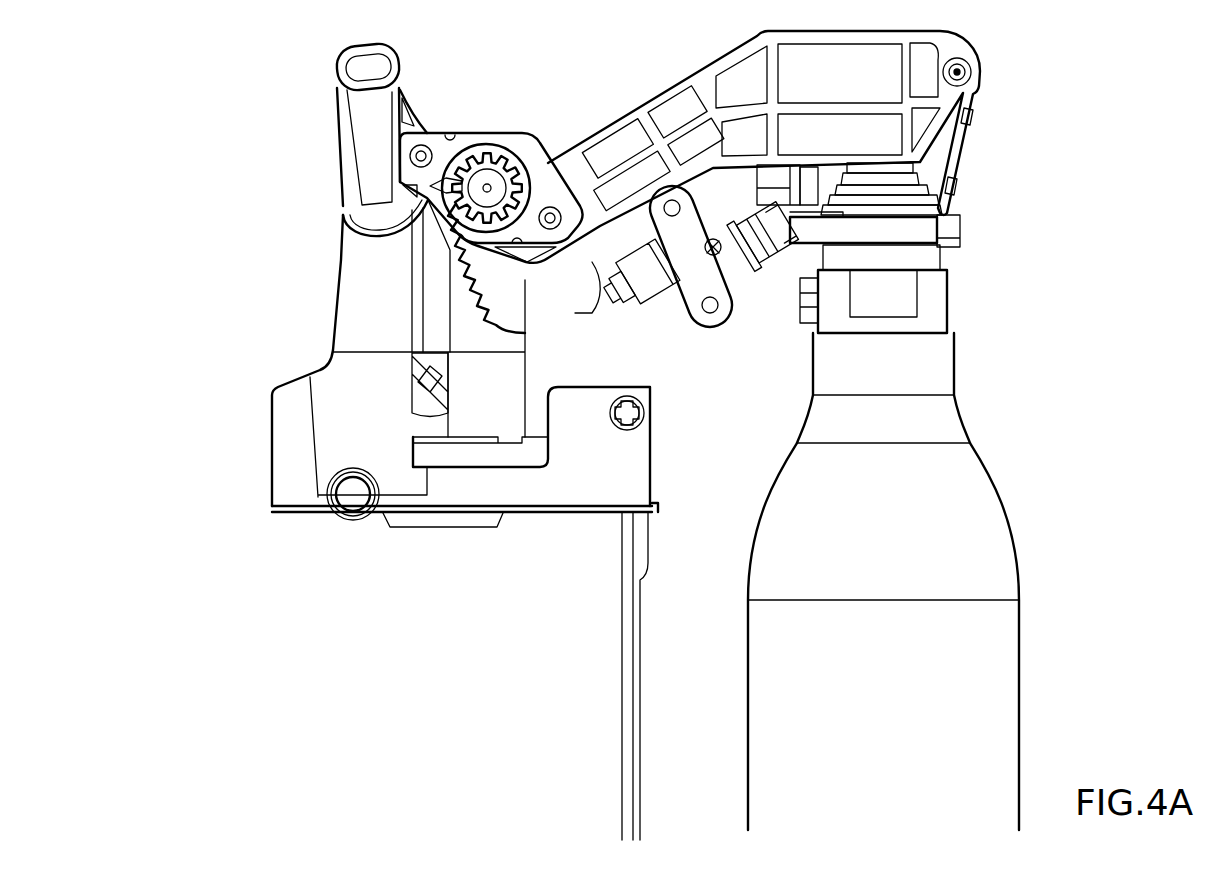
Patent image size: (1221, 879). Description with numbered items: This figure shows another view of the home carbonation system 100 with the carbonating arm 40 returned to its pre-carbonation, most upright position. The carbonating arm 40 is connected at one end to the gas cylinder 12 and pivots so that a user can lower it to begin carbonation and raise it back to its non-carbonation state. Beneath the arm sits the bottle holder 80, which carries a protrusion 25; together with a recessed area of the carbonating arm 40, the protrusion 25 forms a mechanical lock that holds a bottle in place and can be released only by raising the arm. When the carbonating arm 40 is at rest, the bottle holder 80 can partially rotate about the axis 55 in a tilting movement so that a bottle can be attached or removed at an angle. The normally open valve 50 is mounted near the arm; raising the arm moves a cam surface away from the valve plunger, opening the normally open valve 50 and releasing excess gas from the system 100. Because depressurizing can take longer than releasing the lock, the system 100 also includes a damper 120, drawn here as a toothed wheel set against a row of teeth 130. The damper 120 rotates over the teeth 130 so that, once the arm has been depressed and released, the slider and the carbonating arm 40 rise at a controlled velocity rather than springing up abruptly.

The home carbonation system 100 is at (198, 158).
The gas cylinder 12 is at (985, 497).
The carbonating arm 40 is at (453, 130).
The damper 120 is at (493, 150).
The teeth 130 is at (512, 300).
The protrusion 25 is at (330, 325).
The bottle holder 80 is at (303, 500).
The axis 55 is at (353, 495).
The normally open valve 50 is at (718, 273).